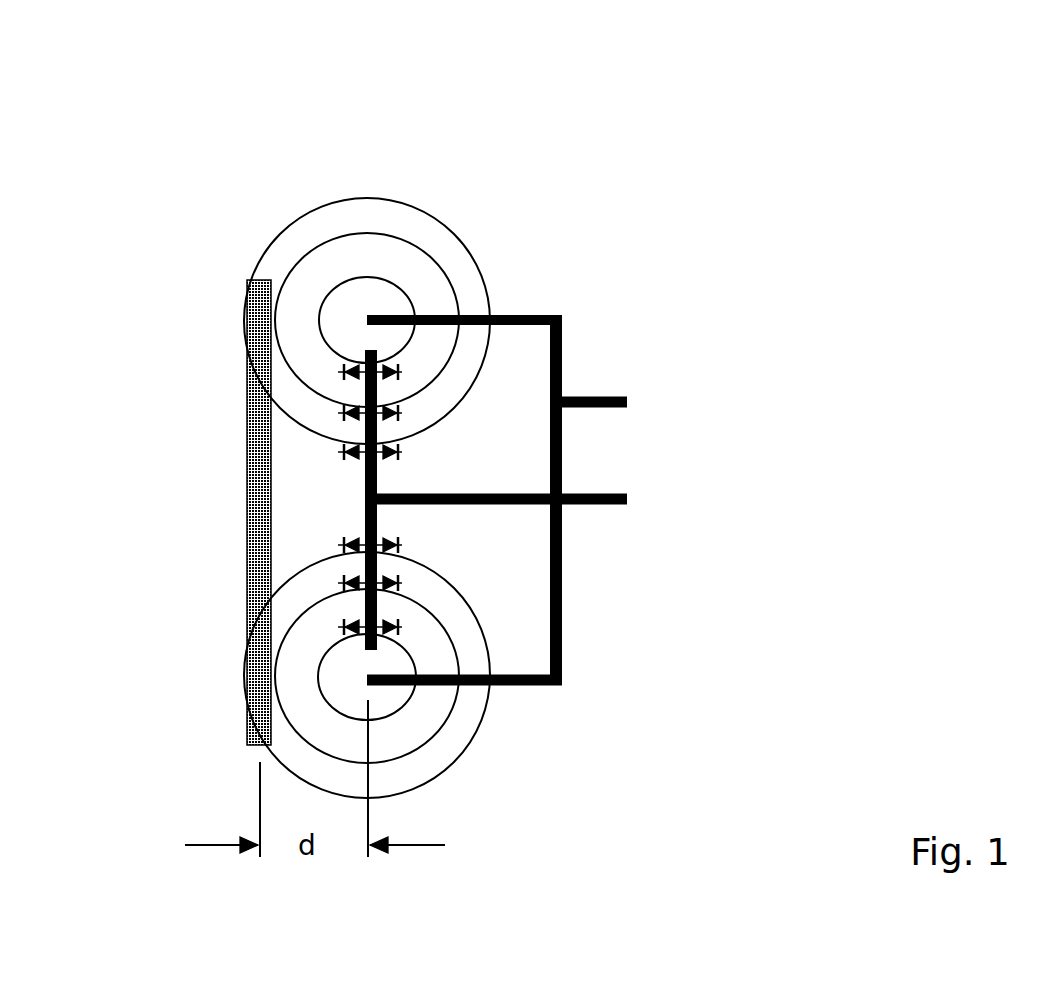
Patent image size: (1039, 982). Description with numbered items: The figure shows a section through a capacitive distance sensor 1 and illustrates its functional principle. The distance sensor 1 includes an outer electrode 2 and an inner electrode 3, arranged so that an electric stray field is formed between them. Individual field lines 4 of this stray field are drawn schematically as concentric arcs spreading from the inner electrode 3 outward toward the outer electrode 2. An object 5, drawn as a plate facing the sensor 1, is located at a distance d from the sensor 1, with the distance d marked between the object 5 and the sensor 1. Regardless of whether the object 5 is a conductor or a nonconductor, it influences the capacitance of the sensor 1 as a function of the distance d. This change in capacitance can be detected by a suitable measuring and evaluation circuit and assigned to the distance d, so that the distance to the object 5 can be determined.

The distance sensor 1 is at (627, 230).
The outer electrode 2 is at (562, 352).
The inner electrode 3 is at (365, 481).
The field lines 4 is at (358, 233).
The object 5 is at (247, 290).